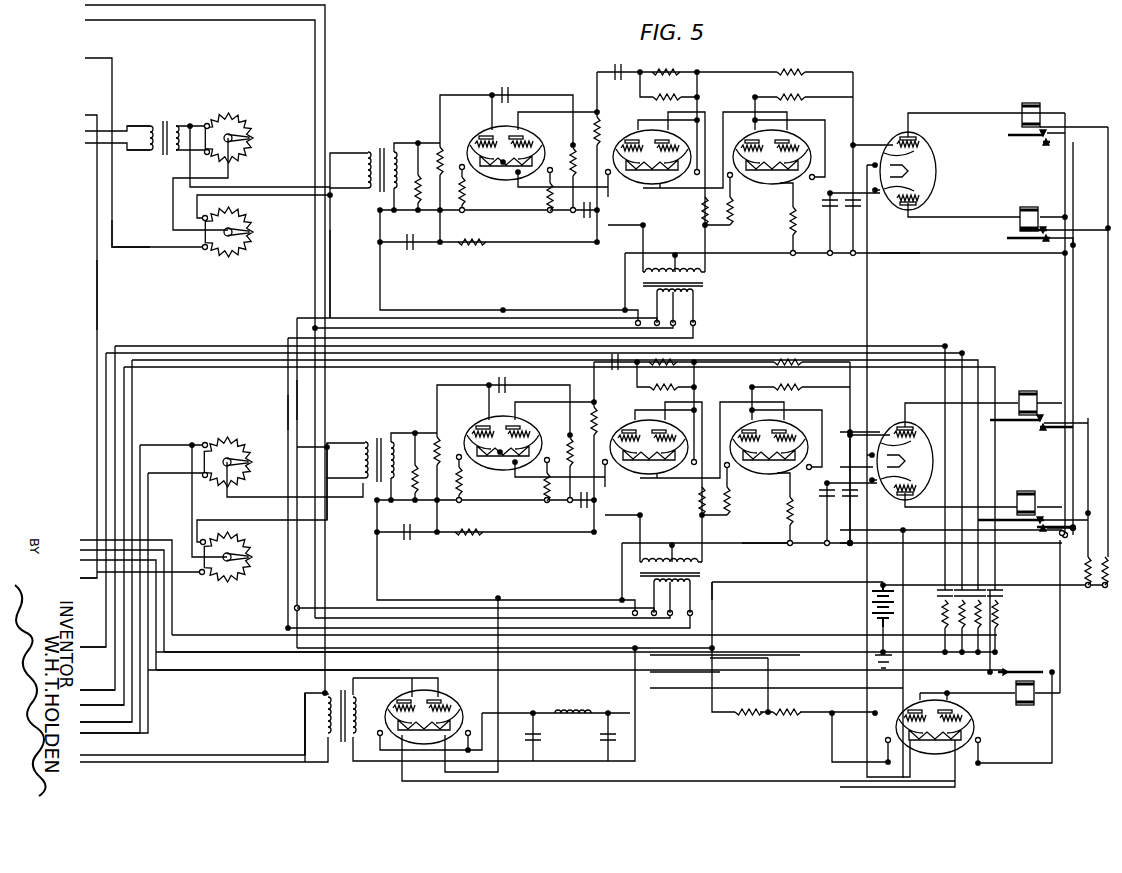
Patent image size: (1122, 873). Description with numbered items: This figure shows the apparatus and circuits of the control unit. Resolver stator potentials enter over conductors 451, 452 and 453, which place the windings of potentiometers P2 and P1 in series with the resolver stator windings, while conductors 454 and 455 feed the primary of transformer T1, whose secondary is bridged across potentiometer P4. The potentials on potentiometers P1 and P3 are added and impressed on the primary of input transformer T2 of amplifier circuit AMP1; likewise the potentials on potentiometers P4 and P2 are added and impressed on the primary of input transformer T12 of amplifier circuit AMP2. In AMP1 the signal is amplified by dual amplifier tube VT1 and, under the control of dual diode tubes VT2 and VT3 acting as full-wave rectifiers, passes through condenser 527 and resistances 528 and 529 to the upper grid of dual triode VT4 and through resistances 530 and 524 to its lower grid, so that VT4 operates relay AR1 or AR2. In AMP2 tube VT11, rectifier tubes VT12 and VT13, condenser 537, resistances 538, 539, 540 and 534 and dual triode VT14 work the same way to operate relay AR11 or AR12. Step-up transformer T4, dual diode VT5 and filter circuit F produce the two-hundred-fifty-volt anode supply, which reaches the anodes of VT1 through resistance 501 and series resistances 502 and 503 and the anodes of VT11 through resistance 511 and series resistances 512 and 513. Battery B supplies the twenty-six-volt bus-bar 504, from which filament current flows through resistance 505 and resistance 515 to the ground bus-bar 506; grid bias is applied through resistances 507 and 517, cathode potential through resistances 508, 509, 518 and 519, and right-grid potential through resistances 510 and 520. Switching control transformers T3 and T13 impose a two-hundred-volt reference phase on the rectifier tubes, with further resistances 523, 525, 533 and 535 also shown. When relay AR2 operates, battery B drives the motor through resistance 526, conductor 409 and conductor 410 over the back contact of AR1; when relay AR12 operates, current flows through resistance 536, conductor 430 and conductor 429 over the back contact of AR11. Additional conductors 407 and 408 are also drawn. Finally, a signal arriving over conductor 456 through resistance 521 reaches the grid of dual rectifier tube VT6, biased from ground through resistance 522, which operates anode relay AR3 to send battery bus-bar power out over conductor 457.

The transformer T1 is at (172, 122).
The conductor 454 is at (124, 125).
The conductor 455 is at (125, 152).
The potentiometer P4 is at (242, 116).
The potentiometer P2 is at (232, 264).
The conductor 452 is at (119, 250).
The conductor 453 is at (97, 296).
The conductor 451 is at (332, 262).
The conductor 430 is at (94, 584).
The conductor 429 is at (105, 647).
The conductor 410 is at (118, 663).
The conductor 409 is at (124, 674).
The conductor 408 is at (140, 713).
The conductor 407 is at (146, 732).
The conductor 456 is at (229, 650).
The conductor 457 is at (226, 670).
The ground bus-bar 506 is at (296, 381).
The battery bus-bar 504 is at (294, 393).
The potentiometer P3 is at (244, 440).
The potentiometer P1 is at (224, 594).
The transformer T4 is at (345, 692).
The dual diode tube VT5 is at (458, 702).
The filter circuit F is at (570, 730).
The resistance 522 is at (754, 720).
The resistance 521 is at (787, 719).
The dual rectifier tube VT6 is at (960, 714).
The anode relay AR3 is at (1023, 680).
The resistance 526 is at (1082, 568).
The resistance 536 is at (1100, 590).
The battery B is at (868, 606).
The input transformer T12 is at (385, 146).
The resistance 513 is at (439, 144).
The grid biasing resistance 517 is at (420, 210).
The resistance 512 is at (472, 250).
The dual amplifier tube VT11 is at (482, 114).
The resistance 518 is at (465, 188).
The resistance 519 is at (548, 196).
The resistance 520 is at (572, 152).
The resistance 511 is at (598, 130).
The condenser 537 is at (618, 64).
The resistance 538 is at (677, 68).
The resistance 540 is at (691, 95).
The amplifier circuit AMP2 is at (748, 60).
The resistance 539 is at (814, 68).
The resistance 534 is at (803, 98).
The dual diode tube VT12 is at (662, 190).
The resistor 535 is at (702, 222).
The resistor 533 is at (733, 225).
The dual diode tube VT13 is at (786, 186).
The resistance 515 is at (791, 214).
The switching control transformer T13 is at (705, 285).
The dual triode tube VT14 is at (898, 130).
The relay AR11 is at (1040, 108).
The relay AR12 is at (1032, 218).
The input transformer T2 is at (360, 450).
The resistance 503 is at (418, 433).
The grid biasing resistance 507 is at (427, 508).
The resistance 502 is at (468, 540).
The dual amplifier tube VT1 is at (493, 437).
The resistance 508 is at (478, 482).
The resistance 509 is at (528, 487).
The resistance 510 is at (552, 434).
The resistance 501 is at (609, 418).
The condenser 527 is at (600, 371).
The resistance 528 is at (680, 374).
The resistance 530 is at (692, 394).
The amplifier circuit AMP1 is at (748, 346).
The resistance 529 is at (812, 373).
The resistance 524 is at (801, 394).
The dual diode tube VT2 is at (649, 464).
The resistor 525 is at (678, 508).
The resistor 523 is at (745, 508).
The dual diode tube VT3 is at (769, 461).
The resistance 505 is at (806, 513).
The switching control transformer T3 is at (686, 586).
The dual triode tube VT4 is at (896, 444).
The relay AR1 is at (1031, 399).
The relay AR2 is at (1025, 500).